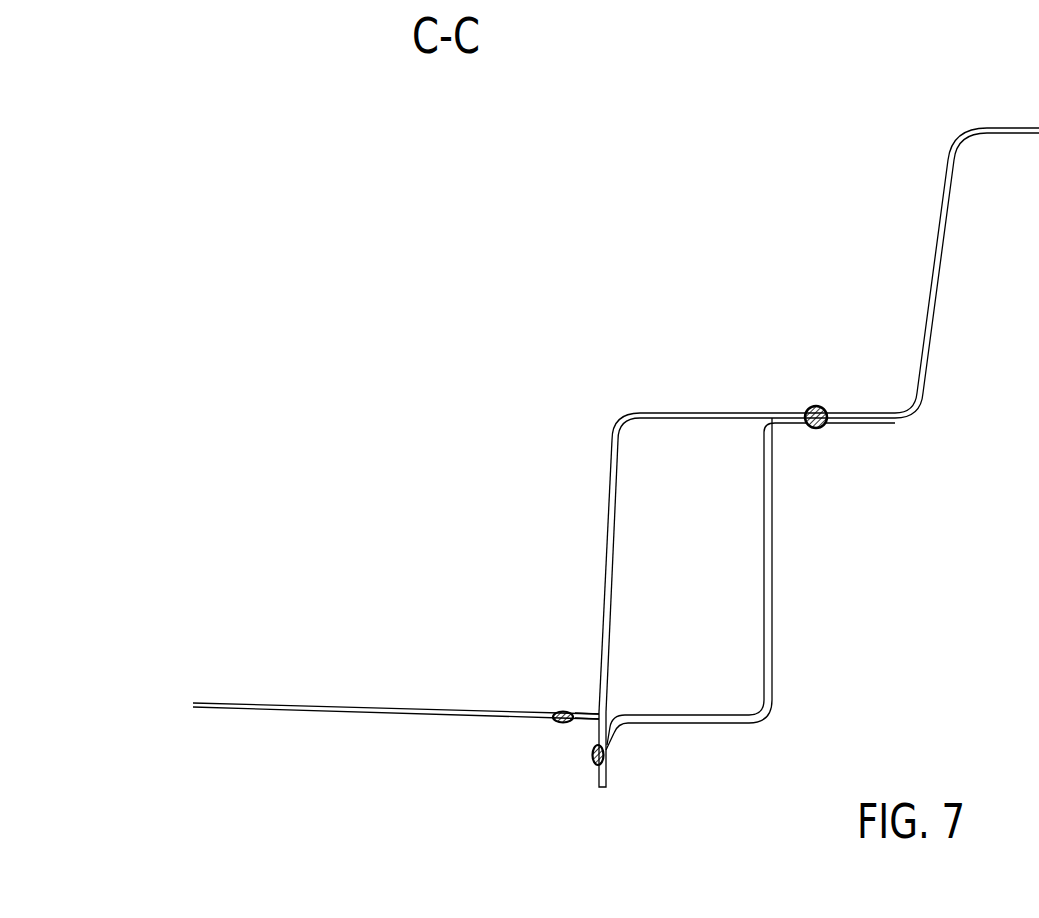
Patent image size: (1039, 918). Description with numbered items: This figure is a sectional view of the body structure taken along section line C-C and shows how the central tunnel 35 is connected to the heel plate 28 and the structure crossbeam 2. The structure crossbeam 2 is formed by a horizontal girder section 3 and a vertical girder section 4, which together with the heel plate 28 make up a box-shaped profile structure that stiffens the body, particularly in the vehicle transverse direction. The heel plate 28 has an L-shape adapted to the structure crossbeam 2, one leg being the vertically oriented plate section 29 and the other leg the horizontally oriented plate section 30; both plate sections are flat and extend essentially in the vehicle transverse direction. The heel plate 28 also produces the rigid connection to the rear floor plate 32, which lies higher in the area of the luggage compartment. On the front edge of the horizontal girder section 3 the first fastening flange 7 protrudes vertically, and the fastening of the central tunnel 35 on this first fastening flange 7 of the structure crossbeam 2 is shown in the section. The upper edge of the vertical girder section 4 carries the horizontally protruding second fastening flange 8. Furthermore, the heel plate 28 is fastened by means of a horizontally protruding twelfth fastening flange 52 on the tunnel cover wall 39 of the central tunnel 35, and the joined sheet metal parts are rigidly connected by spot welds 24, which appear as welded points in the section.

The structure crossbeam 2 is at (826, 559).
The horizontal girder section 3 is at (705, 716).
The vertical girder section 4 is at (773, 547).
The first fastening flange 7 is at (607, 776).
The second fastening flange 8 is at (835, 427).
The spot welds 24 is at (818, 406).
The heel plate 28 is at (533, 576).
The vertically oriented plate section 29 is at (609, 528).
The horizontally oriented plate section 30 is at (686, 411).
The rear floor plate 32 is at (942, 225).
The central tunnel 35 is at (396, 636).
The tunnel cover wall 39 is at (287, 704).
The twelfth fastening flange 52 is at (578, 709).